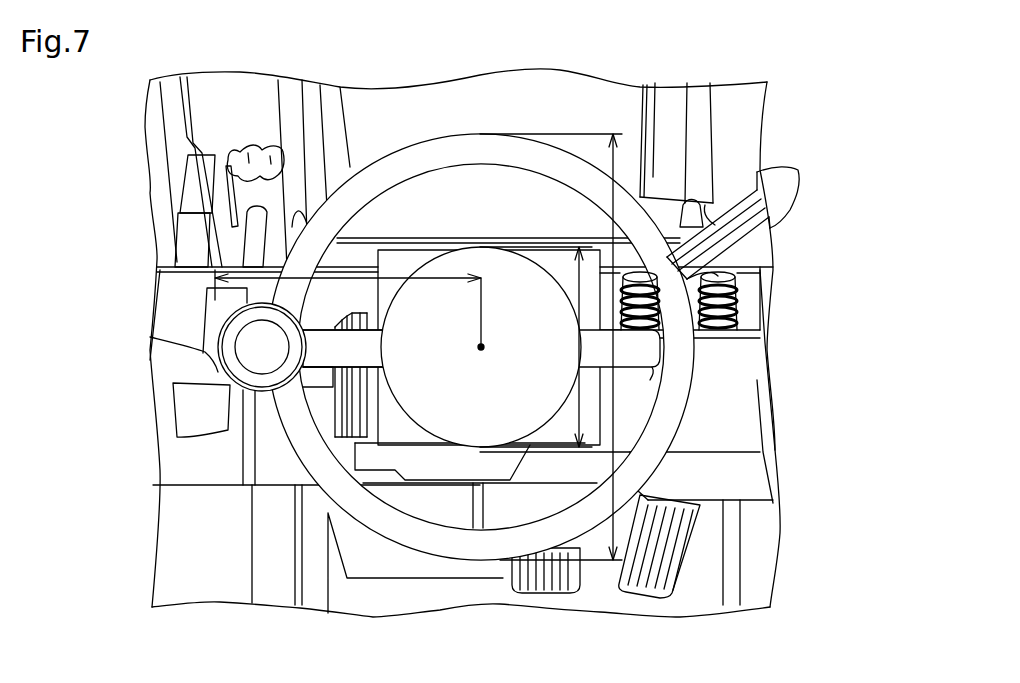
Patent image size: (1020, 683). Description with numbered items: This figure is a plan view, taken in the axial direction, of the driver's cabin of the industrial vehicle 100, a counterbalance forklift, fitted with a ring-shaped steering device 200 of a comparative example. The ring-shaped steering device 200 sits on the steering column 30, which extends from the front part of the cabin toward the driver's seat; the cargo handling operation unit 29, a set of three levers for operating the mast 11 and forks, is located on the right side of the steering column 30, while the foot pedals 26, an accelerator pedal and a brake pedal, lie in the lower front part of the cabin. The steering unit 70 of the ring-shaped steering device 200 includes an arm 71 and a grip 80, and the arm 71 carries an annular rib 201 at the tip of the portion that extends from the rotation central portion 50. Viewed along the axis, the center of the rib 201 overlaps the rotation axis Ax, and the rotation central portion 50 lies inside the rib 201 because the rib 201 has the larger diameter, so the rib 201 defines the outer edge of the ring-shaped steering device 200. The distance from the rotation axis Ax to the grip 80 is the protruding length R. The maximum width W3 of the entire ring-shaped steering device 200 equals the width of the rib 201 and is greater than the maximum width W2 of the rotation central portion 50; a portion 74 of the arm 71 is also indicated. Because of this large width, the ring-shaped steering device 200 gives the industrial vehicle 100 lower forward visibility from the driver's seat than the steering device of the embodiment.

The industrial vehicle 100 is at (120, 172).
The mast 11 is at (316, 103).
The rib 201 is at (458, 145).
The steering unit 70 is at (530, 128).
The ring-shaped steering device 200 is at (645, 195).
The cargo handling operation unit 29 is at (798, 185).
The steering column 30 is at (400, 250).
The rotation central portion 50 is at (508, 248).
The protruding length R is at (327, 275).
The rotation axis Ax is at (485, 345).
The grip 80 is at (218, 347).
The arm 71 is at (326, 320).
The maximum width of the rotation central portion W2 is at (571, 349).
The spoke portion 74 is at (664, 372).
The maximum width of the entire ring-shaped steering device W3 is at (605, 418).
The foot pedals 26 is at (647, 582).